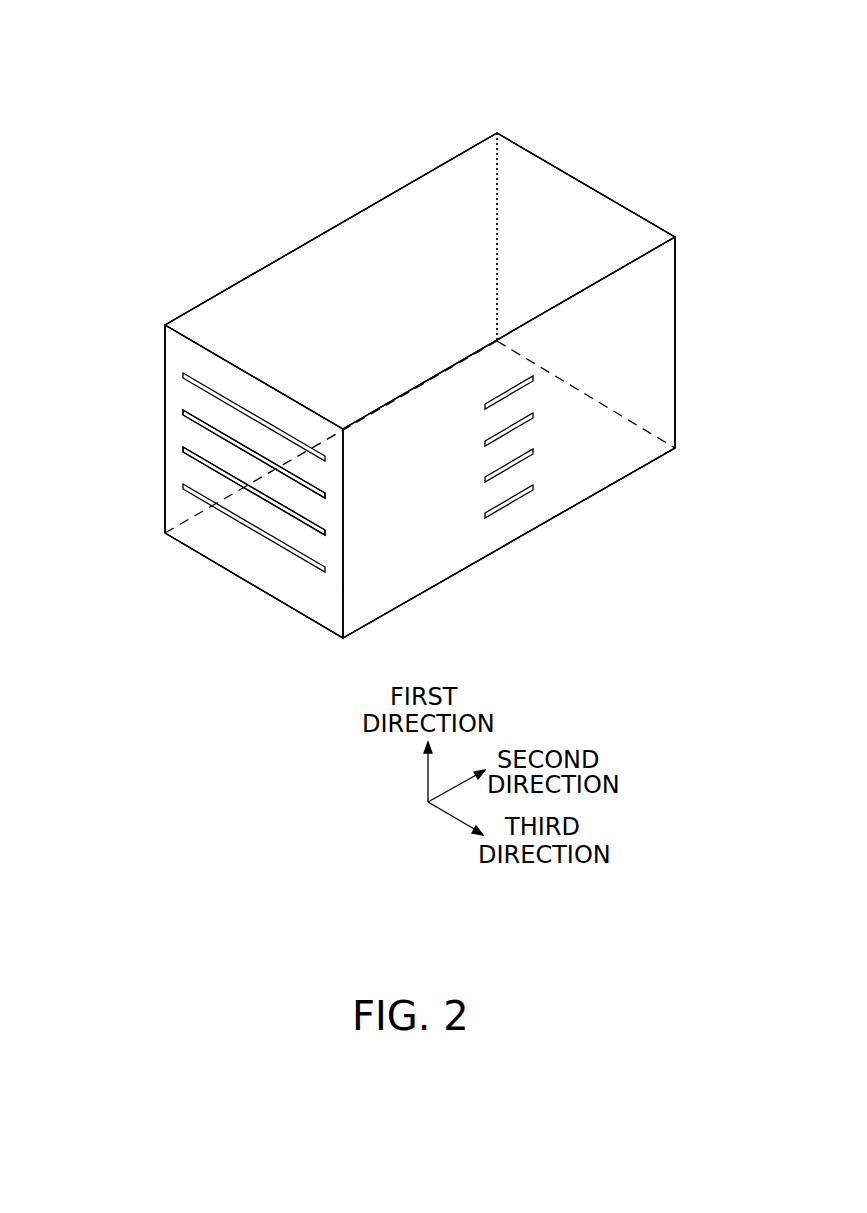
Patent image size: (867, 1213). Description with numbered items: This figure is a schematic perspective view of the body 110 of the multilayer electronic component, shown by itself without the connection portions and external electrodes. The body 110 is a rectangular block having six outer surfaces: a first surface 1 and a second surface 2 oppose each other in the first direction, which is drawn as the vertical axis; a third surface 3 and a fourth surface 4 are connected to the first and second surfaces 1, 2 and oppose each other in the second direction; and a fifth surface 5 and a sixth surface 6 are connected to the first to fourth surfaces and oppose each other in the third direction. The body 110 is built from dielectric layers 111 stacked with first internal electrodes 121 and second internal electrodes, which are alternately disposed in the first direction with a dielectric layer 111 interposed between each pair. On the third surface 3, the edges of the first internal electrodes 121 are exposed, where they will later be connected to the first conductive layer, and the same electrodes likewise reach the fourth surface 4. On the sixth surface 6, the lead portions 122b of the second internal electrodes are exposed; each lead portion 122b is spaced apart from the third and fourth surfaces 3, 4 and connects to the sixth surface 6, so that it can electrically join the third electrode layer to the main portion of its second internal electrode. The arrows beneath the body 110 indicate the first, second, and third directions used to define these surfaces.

The body 110 is at (178, 48).
The first surface 1 is at (445, 538).
The second surface 2 is at (425, 214).
The third surface 3 is at (238, 510).
The fourth surface 4 is at (590, 224).
The fifth surface 5 is at (275, 298).
The sixth surface 6 is at (645, 371).
The dielectric layer 111 is at (195, 438).
The first internal electrode 121 is at (192, 388).
The lead portion 122b is at (530, 376).